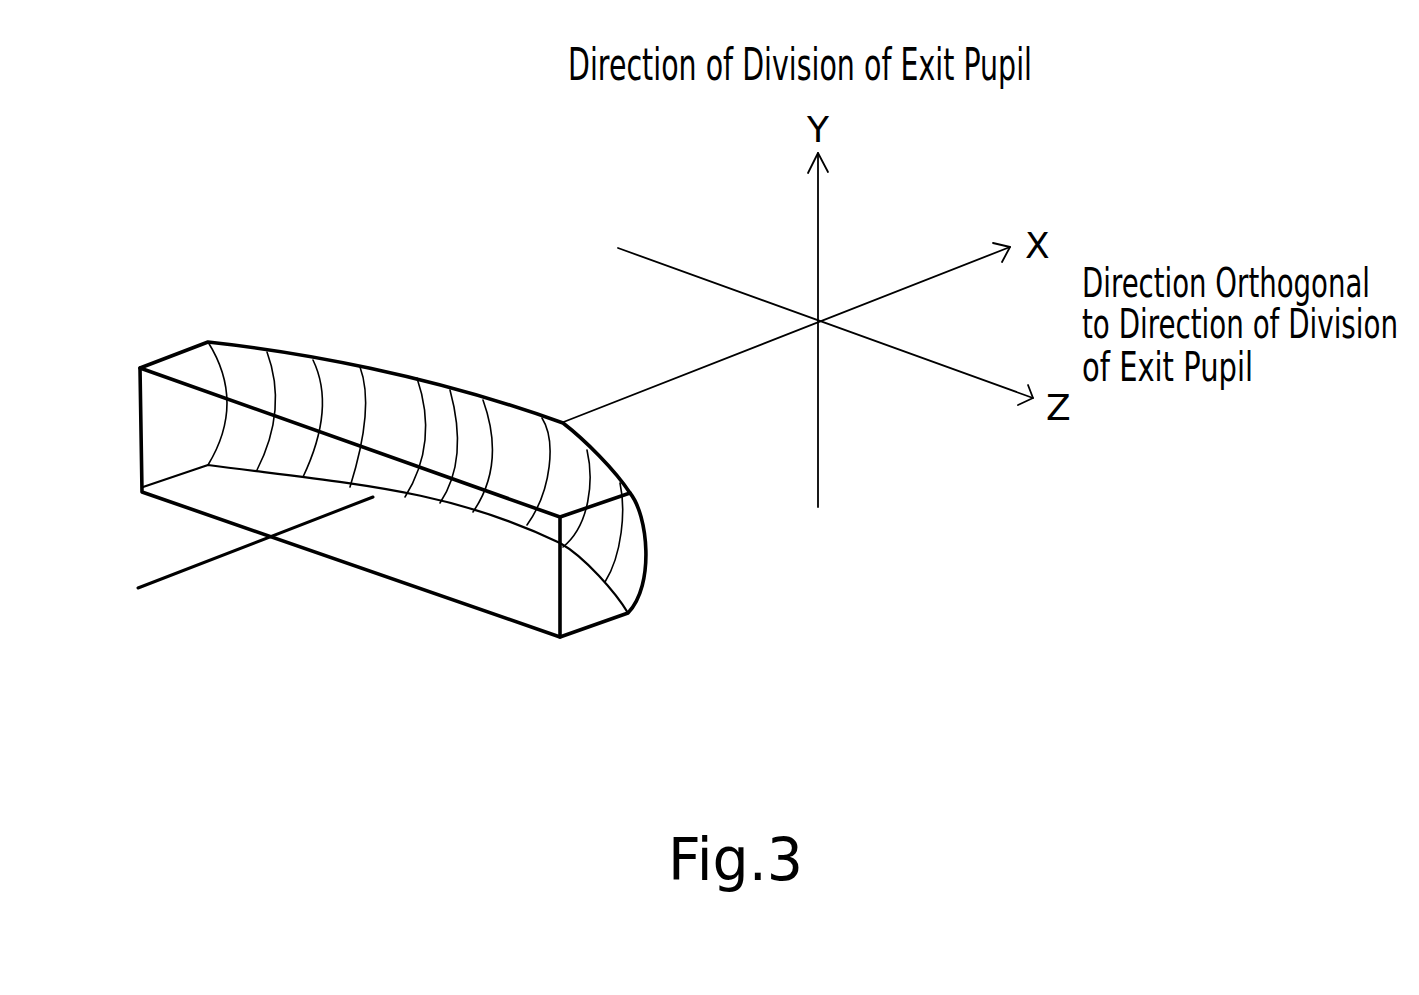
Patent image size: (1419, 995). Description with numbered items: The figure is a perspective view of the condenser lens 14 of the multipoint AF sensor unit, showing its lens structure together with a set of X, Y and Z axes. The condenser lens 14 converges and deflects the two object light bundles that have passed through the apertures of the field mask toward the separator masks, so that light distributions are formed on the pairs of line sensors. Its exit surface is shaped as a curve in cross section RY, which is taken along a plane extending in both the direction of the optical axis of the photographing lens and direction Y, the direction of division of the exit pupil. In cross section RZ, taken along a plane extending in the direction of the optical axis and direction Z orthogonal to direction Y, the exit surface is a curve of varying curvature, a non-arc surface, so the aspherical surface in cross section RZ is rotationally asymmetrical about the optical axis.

The condenser lens 14 is at (450, 431).
The cross section RZ is at (470, 388).
The cross section RY is at (647, 553).